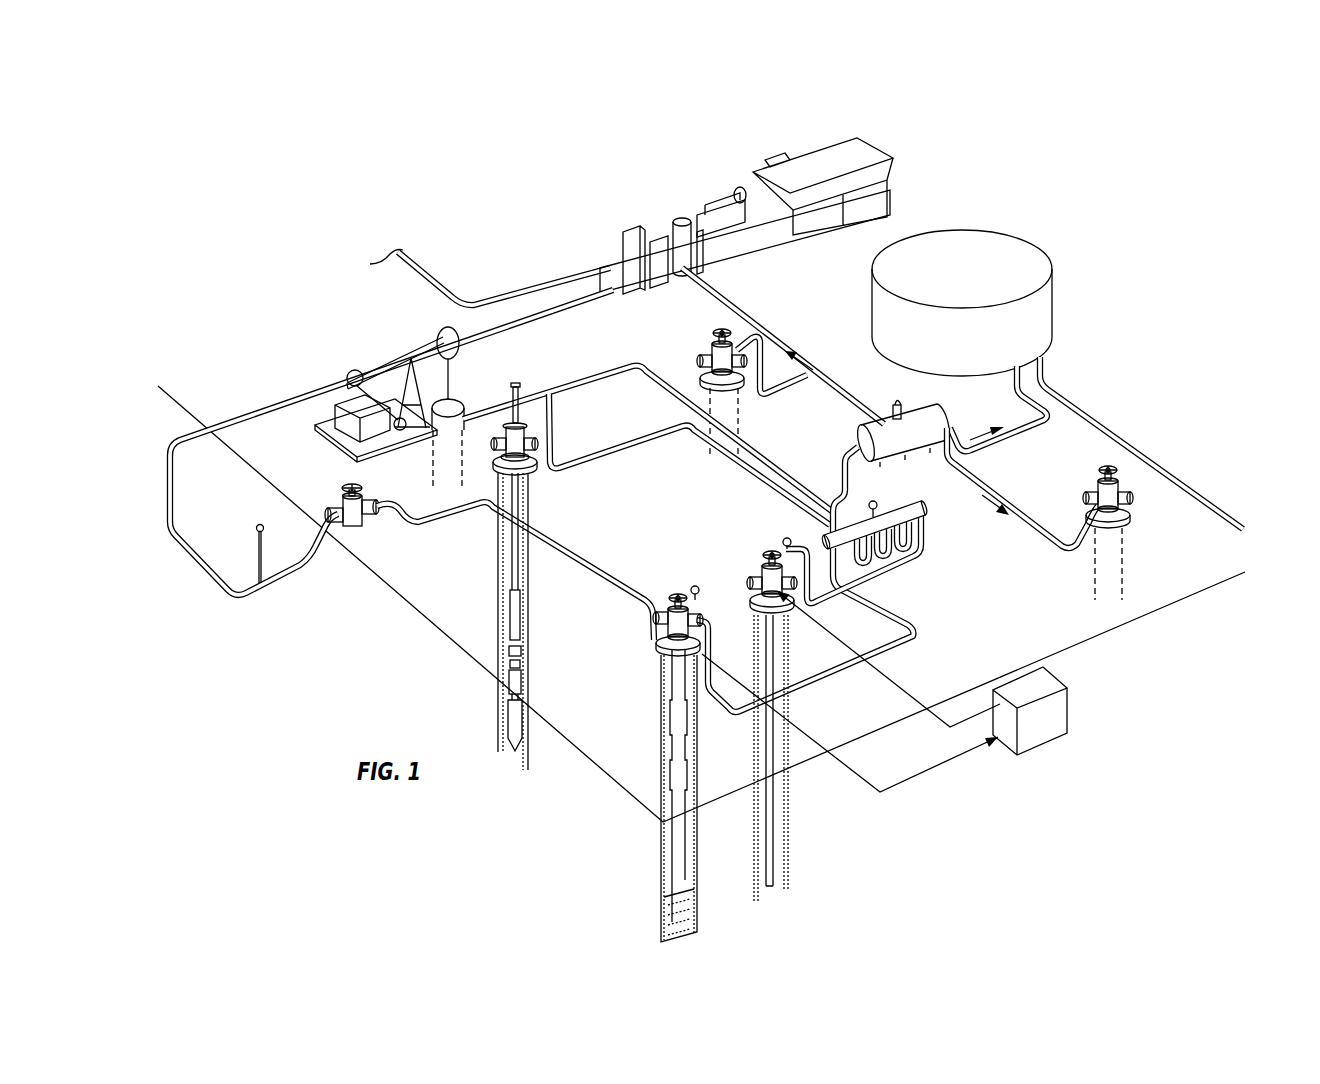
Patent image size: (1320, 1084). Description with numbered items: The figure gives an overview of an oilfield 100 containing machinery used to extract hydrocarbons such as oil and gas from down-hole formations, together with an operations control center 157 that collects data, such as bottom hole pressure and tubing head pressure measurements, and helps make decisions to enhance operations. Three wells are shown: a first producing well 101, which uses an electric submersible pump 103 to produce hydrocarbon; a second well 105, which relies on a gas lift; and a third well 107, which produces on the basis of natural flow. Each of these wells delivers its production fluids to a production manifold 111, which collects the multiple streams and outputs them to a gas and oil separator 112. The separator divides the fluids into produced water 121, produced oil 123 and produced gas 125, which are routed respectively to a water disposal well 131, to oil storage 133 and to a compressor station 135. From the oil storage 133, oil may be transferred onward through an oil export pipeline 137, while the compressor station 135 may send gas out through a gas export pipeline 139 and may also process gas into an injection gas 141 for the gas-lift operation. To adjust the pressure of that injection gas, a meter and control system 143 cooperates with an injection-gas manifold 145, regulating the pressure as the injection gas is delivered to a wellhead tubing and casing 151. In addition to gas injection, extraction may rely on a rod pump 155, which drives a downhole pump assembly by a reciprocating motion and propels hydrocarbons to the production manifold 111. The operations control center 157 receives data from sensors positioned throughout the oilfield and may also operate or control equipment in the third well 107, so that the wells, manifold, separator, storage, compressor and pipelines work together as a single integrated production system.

The oilfield 100 is at (1024, 168).
The first producing well 101 is at (482, 577).
The electric submersible pump 103 is at (512, 628).
The second well 105 is at (650, 868).
The third well 107 is at (804, 868).
The production manifold 111 is at (908, 513).
The gas and oil separator 112 is at (930, 420).
The produced water 121 is at (1003, 503).
The produced oil 123 is at (1023, 434).
The produced gas 125 is at (716, 310).
The water disposal well 131 is at (1094, 572).
The oil storage 133 is at (1003, 246).
The compressor station 135 is at (729, 170).
The oil export pipeline 137 is at (1118, 437).
The gas export pipeline 139 is at (518, 292).
The injection gas 141 is at (310, 397).
The meter and control system 143 is at (258, 526).
The injection-gas manifold 145 is at (351, 486).
The wellhead tubing and casing 151 is at (688, 596).
The rod pump 155 is at (384, 440).
The operations control center 157 is at (1053, 688).